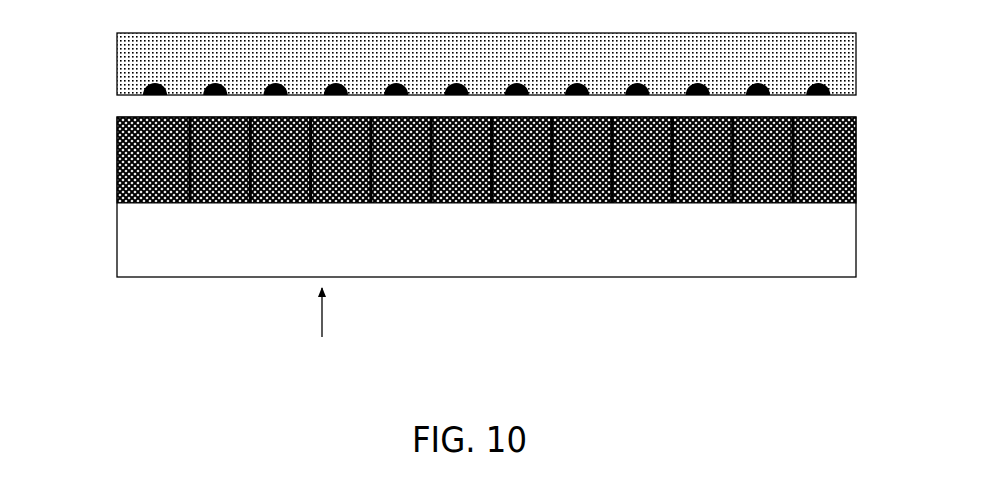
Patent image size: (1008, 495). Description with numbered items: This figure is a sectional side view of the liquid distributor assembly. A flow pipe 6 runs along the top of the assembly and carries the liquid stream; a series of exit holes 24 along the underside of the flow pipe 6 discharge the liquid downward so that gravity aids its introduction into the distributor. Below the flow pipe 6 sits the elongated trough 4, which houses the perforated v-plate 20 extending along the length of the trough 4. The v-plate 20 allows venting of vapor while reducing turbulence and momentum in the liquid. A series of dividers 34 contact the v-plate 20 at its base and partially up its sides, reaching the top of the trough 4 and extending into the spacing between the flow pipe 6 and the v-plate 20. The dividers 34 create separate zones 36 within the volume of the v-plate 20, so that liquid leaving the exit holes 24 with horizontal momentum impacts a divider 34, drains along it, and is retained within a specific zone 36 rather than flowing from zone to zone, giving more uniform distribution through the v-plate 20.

The flow pipe 6 is at (858, 52).
The exit holes 24 is at (822, 95).
The perforated v-plate 20 is at (470, 207).
The zones 36 is at (577, 208).
The dividers 34 is at (735, 207).
The trough 4 is at (322, 327).